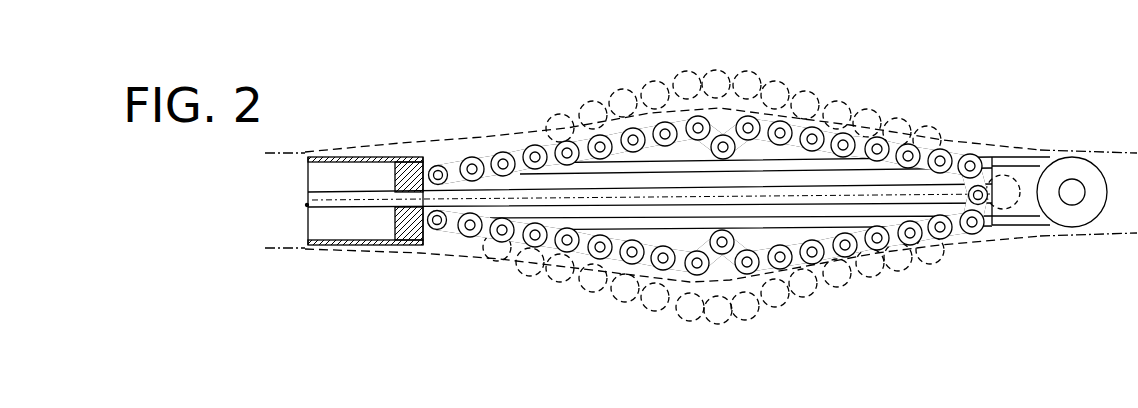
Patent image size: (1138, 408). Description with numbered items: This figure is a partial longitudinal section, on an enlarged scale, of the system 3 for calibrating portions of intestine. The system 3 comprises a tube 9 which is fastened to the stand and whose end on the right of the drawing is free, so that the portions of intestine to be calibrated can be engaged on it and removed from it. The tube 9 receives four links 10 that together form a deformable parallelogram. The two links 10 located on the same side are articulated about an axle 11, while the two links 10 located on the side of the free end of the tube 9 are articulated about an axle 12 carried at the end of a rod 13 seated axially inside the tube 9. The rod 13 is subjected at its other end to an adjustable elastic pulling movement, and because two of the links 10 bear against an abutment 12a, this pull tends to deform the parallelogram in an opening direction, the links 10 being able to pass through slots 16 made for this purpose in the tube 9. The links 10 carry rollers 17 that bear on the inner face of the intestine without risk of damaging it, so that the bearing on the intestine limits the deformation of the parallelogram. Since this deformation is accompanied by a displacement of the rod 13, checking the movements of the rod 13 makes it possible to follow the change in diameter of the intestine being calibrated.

The calibration system 3 is at (932, 106).
The tube 9 is at (395, 246).
The links 10 is at (717, 118).
The axle 11 is at (452, 163).
The axle 12 is at (996, 193).
The abutment 12a is at (421, 156).
The rod 13 is at (825, 195).
The slots 16 is at (820, 167).
The rollers 17 is at (880, 252).